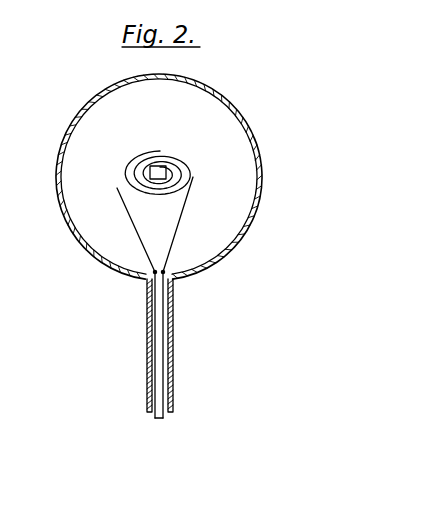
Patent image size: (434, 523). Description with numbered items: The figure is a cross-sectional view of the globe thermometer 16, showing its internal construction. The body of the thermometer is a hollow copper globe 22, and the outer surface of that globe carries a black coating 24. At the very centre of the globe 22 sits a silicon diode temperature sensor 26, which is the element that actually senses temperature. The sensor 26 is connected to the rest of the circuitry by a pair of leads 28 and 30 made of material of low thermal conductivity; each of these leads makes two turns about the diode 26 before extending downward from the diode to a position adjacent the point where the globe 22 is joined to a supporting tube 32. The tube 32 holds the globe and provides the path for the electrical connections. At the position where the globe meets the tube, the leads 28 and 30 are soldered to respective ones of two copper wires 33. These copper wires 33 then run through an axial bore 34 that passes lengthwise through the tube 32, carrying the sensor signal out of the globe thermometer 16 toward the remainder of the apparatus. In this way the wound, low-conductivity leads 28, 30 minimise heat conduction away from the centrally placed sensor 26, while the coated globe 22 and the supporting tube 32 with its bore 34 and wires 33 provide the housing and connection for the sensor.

The globe thermometer 16 is at (186, 176).
The hollow copper globe 22 is at (258, 153).
The black coating 24 is at (260, 210).
The silicon diode temperature sensor 26 is at (162, 168).
The lead 28 is at (133, 235).
The lead 30 is at (178, 232).
The supporting tube 32 is at (172, 348).
The copper wires 33 is at (166, 392).
The axial bore 34 is at (164, 413).